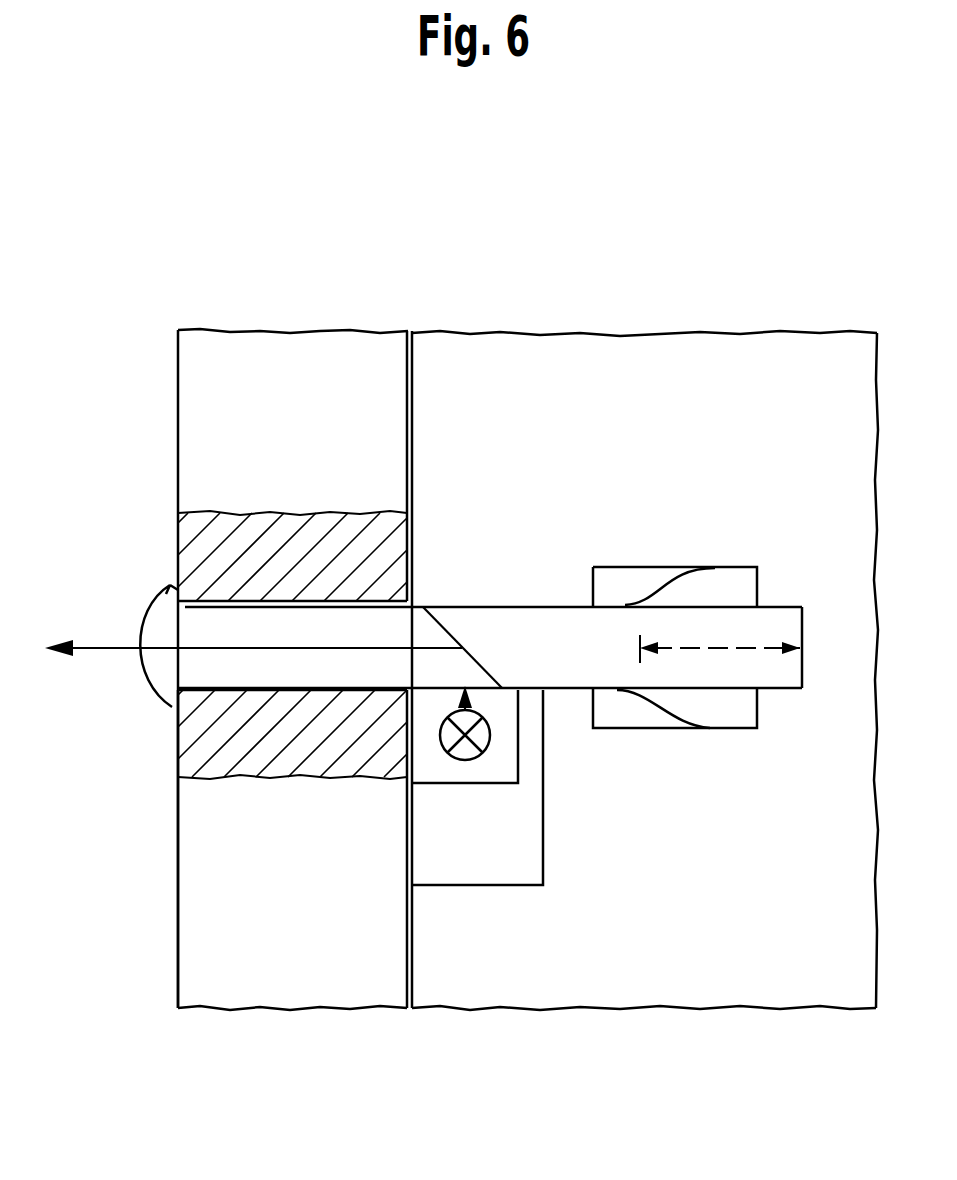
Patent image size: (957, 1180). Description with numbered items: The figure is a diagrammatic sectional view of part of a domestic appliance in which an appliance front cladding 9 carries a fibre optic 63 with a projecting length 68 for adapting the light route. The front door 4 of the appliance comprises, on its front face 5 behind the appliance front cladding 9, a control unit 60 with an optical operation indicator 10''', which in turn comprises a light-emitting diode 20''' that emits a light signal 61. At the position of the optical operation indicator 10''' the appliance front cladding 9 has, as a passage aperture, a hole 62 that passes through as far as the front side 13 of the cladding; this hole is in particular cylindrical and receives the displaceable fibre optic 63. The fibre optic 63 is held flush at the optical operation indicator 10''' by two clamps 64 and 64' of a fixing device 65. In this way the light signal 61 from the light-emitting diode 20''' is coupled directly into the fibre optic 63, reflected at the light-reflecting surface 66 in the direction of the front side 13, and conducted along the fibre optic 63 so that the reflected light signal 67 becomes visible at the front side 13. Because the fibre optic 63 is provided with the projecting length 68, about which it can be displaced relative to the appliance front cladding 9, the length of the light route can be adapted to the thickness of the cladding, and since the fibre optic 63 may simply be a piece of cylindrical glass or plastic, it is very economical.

The front door 4 is at (735, 352).
The front face 5 is at (411, 380).
The appliance front cladding 9 is at (277, 363).
The front side 13 is at (178, 395).
The control unit 60 is at (500, 875).
The light signal 61 is at (487, 708).
The hole 62 is at (253, 706).
The fibre optic 63 is at (200, 618).
The clamp 64 is at (670, 527).
The clamp 64' is at (702, 759).
The fixing device 65 is at (597, 567).
The light-reflecting surface 66 is at (455, 633).
The reflected light signal 67 is at (103, 648).
The projecting length 68 is at (713, 648).
The light-emitting diode 20''' is at (443, 775).
The optical operation indicator 10''' is at (568, 810).